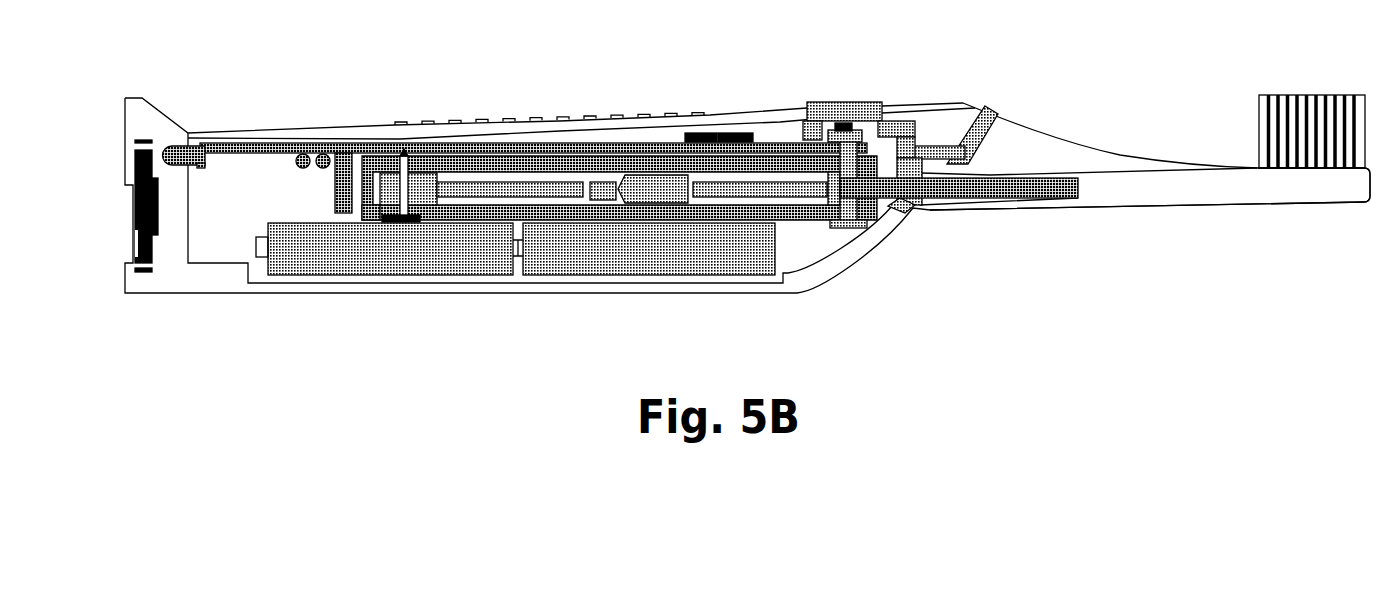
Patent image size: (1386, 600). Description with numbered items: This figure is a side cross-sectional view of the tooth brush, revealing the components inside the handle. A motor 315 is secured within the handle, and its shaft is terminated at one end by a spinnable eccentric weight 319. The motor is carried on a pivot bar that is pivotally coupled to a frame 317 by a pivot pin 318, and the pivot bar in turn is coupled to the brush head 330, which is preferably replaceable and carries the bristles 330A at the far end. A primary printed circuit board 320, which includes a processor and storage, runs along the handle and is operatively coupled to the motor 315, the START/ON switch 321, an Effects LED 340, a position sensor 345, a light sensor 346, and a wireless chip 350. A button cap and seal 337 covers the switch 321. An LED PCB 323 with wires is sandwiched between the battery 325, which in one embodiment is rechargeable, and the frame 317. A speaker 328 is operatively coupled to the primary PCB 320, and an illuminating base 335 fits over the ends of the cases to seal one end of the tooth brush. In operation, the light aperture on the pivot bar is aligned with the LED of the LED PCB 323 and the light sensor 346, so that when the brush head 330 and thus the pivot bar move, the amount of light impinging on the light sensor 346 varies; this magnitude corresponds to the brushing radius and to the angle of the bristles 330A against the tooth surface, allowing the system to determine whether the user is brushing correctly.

The motor 315 is at (662, 192).
The frame 317 is at (367, 218).
The pivot pin 318 is at (897, 200).
The eccentric weight 319 is at (603, 188).
The primary printed circuit board 320 is at (258, 143).
The START/ON switch 321 is at (847, 128).
The LED PCB 323 is at (403, 218).
The battery 325 is at (477, 260).
The speaker 328 is at (133, 206).
The brush head 330 is at (1308, 192).
The bristles 330A is at (1310, 97).
The illuminating base 335 is at (170, 277).
The button cap and seal 337 is at (842, 105).
The Effects LED 340 is at (183, 147).
The position sensor 345 is at (311, 152).
The light sensor 346 is at (404, 150).
The wireless chip 350 is at (700, 135).